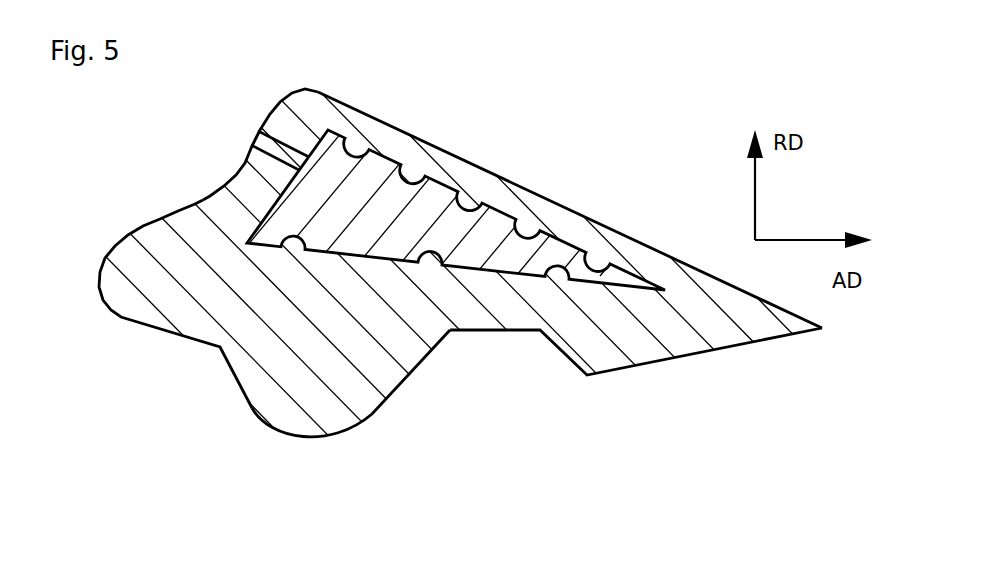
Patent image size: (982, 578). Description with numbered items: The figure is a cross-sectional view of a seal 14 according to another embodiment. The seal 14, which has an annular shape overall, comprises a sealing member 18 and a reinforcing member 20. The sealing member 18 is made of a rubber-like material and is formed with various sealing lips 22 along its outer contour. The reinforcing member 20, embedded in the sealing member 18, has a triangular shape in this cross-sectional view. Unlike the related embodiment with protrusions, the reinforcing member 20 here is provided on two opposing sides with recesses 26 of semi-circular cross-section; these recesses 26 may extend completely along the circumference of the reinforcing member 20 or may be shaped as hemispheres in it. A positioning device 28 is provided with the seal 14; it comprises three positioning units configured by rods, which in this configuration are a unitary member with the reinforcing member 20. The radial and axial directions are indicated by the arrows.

The seal 14 is at (186, 147).
The sealing member 18 is at (200, 312).
The reinforcing member 20 is at (381, 178).
The sealing lips 22 is at (310, 443).
The recesses 26 is at (542, 228).
The positioning device 28 is at (284, 142).